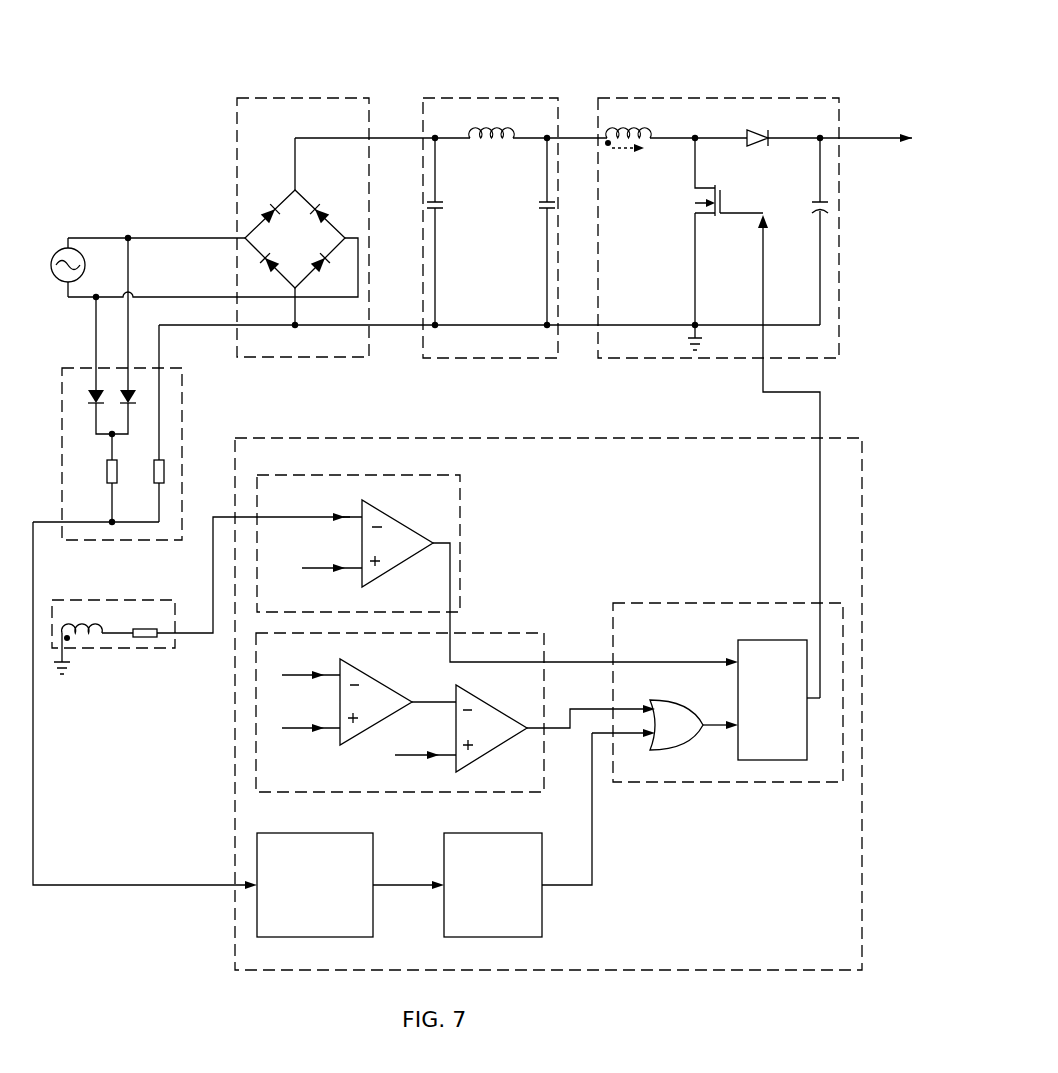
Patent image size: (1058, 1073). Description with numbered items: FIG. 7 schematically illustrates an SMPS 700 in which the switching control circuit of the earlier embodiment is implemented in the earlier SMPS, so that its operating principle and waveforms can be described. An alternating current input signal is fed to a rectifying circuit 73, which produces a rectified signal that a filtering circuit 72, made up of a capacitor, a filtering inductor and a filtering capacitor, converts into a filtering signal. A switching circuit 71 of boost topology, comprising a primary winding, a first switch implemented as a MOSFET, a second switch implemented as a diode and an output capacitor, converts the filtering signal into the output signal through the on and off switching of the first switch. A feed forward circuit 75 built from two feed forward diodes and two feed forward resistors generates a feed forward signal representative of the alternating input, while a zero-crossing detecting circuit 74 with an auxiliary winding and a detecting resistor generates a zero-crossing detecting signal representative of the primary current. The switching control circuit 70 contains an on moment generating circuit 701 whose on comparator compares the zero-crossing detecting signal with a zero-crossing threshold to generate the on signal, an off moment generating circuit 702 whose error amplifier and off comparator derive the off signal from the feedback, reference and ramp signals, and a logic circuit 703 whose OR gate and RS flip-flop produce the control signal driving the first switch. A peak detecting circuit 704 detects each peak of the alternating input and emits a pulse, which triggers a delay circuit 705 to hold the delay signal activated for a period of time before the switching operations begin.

The SMPS 700 is at (156, 155).
The rectifier bridge 73 is at (300, 98).
The filter circuit 72 is at (477, 98).
The power stage circuit 71 is at (705, 98).
The switching control circuit 70 is at (548, 438).
The feedback circuit 75 is at (120, 542).
The zero crossing detection circuit 74 is at (135, 598).
The first comparator circuit 701 is at (375, 474).
The error amplifier and second comparator circuit 702 is at (518, 792).
The logic circuit with flip-flop 703 is at (682, 604).
The peak detecting circuit 704 is at (285, 938).
The delay circuit 705 is at (487, 938).